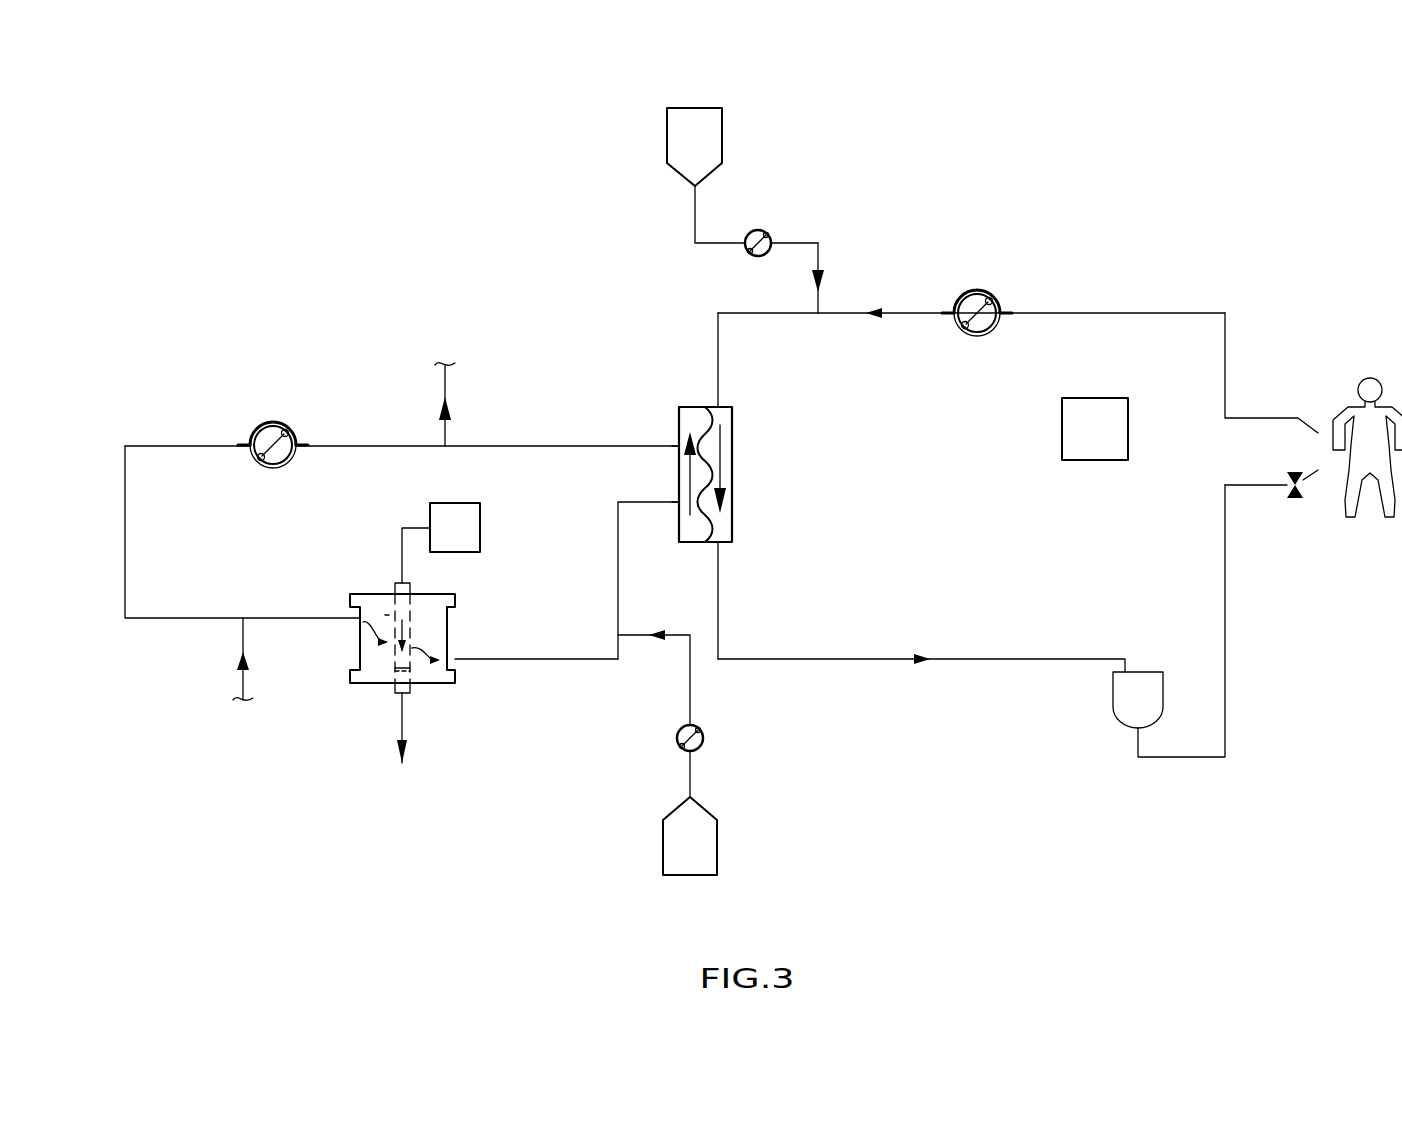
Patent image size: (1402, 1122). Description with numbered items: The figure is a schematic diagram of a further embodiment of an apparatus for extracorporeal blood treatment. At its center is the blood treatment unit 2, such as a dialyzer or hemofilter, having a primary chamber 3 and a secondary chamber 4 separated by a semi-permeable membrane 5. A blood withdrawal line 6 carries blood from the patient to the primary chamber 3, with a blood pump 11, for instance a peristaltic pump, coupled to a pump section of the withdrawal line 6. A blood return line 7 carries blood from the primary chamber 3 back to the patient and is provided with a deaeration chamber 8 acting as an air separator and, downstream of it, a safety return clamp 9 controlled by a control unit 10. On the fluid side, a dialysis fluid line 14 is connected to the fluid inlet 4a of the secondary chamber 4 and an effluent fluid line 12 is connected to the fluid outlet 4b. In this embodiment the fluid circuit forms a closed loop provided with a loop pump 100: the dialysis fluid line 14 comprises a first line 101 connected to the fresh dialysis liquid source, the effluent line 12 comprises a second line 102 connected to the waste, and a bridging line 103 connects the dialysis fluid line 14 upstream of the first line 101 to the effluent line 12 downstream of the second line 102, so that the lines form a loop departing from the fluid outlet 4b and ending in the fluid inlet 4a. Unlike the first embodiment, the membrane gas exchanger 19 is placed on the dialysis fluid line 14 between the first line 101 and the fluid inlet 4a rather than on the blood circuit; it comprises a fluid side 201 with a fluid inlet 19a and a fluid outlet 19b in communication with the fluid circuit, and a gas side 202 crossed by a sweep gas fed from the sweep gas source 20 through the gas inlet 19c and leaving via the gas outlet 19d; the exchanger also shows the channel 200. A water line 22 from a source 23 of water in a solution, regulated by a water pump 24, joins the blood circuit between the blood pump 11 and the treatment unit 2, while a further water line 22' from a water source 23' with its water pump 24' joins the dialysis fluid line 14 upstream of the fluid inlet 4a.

The blood treatment unit 2 is at (734, 437).
The primary chamber 3 is at (725, 471).
The secondary chamber 4 is at (697, 413).
The fluid inlet 4a is at (678, 506).
The fluid outlet 4b is at (676, 444).
The semi-permeable membrane 5 is at (725, 503).
The blood withdrawal line 6 is at (1227, 345).
The blood return line 7 is at (1226, 690).
The deaeration chamber 8 is at (1113, 705).
The safety return clamp 9 is at (1298, 500).
The control unit 10 is at (1128, 428).
The blood pump 11 is at (997, 330).
The effluent fluid line 12 is at (546, 445).
The dialysis fluid line 14 is at (618, 520).
The membrane gas exchanger 19 is at (360, 688).
The fluid inlet 19a is at (360, 618).
The fluid outlet 19b is at (453, 658).
The gas inlet 19c is at (402, 583).
The gas outlet 19d is at (408, 696).
The sweep gas source 20 is at (480, 525).
The water line 22 is at (971, 278).
The further water line 22' is at (649, 677).
The source of water 23 is at (663, 166).
The water source 23' is at (733, 836).
The water pump 24 is at (781, 209).
The water pump 24' is at (727, 752).
The loop pump 100 is at (265, 437).
The first line 101 is at (240, 682).
The second line 102 is at (446, 432).
The bridging line 103 is at (125, 496).
The valve channel 200 is at (373, 603).
The fluid side 201 is at (378, 660).
The gas side 202 is at (420, 673).